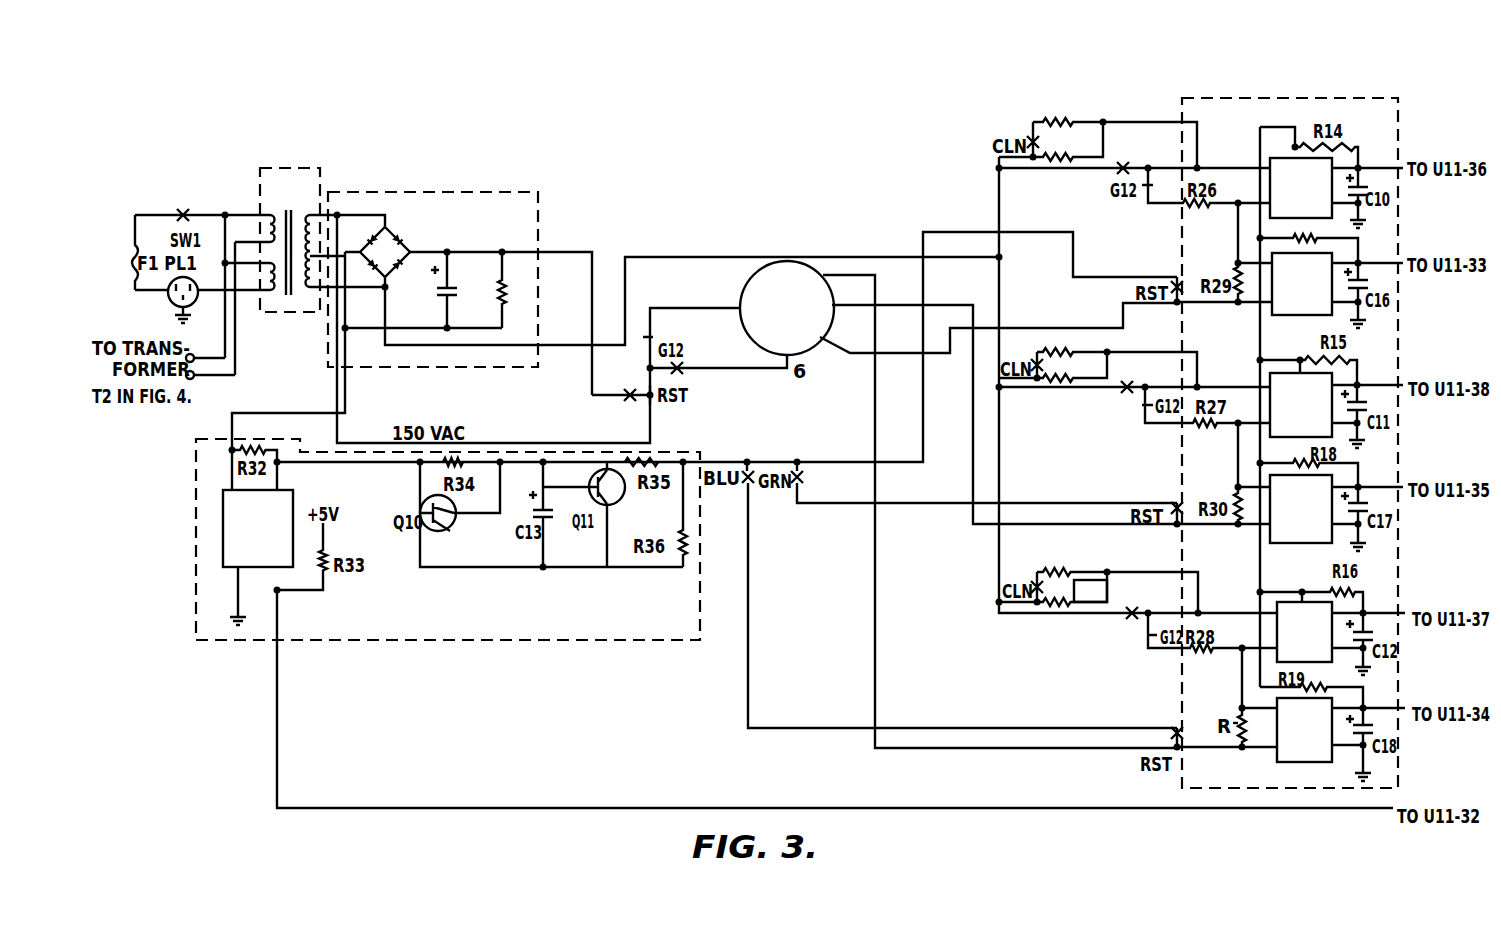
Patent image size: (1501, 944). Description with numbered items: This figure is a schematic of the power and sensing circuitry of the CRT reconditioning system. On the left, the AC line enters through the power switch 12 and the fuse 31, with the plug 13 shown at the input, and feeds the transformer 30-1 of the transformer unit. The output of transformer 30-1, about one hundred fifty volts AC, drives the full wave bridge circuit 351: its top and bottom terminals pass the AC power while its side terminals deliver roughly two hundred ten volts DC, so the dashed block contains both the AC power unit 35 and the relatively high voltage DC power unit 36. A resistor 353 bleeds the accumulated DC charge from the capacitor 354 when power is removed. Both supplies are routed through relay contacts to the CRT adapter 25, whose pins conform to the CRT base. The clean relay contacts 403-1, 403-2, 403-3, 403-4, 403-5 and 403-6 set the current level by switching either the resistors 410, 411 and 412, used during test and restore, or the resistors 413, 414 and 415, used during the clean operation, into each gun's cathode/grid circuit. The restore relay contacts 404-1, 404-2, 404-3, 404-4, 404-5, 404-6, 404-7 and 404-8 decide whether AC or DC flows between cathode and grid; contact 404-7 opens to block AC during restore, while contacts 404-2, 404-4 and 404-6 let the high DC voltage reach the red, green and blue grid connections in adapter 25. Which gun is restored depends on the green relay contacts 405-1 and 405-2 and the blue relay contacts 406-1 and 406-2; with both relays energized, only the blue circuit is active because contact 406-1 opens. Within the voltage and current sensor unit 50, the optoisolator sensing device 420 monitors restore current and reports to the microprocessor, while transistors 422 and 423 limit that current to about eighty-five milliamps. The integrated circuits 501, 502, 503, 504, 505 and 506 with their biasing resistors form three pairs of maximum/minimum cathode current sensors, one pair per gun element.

The power switch 12 is at (187, 209).
The power plug PL1 13 is at (170, 302).
The fuse 31 is at (130, 251).
The transformer 30-1 is at (265, 168).
The AC power unit 35 is at (479, 192).
The relatively high voltage DC power unit 36 is at (615, 308).
The voltage and current sensor unit 50 is at (443, 642).
The full wave bridge circuit 351 is at (393, 233).
The resistor 353 is at (508, 292).
The capacitor 354 is at (450, 282).
The adapter 25 is at (742, 293).
The clean relay contact 403-1 is at (1040, 128).
The clean relay contact 403-2 is at (1000, 133).
The clean relay contact 403-3 is at (1048, 383).
The clean relay contact 403-4 is at (1037, 357).
The clean relay contact 403-5 is at (1047, 605).
The clean relay contact 403-6 is at (1030, 582).
The restore relay contact 404-1 is at (1188, 302).
The restore relay contact 404-2 is at (1177, 280).
The restore relay contact 404-3 is at (1190, 527).
The restore relay contact 404-4 is at (1177, 500).
The restore relay contact 404-5 is at (1201, 749).
The restore relay contact 404-6 is at (1179, 727).
The restore relay contact 404-7 is at (652, 412).
The restore relay contact 404-8 is at (632, 400).
The green relay contact 405-1 is at (813, 459).
The green relay contact 405-2 is at (803, 477).
The blue relay contact 406-1 is at (778, 458).
The blue relay contact 406-2 is at (752, 490).
The resistor 410 is at (1083, 140).
The resistor 411 is at (1067, 380).
The resistor 412 is at (1073, 604).
The resistor 413 is at (1065, 89).
The resistor 414 is at (1068, 350).
The resistor 415 is at (1080, 572).
The optoisolator sensing device 420 is at (297, 491).
The transistor 422 is at (456, 528).
The transistor 423 is at (624, 496).
The integrated circuit 501 is at (1297, 176).
The integrated circuit 502 is at (1303, 316).
The integrated circuit 503 is at (1332, 437).
The integrated circuit 504 is at (1313, 544).
The integrated circuit 505 is at (1332, 662).
The integrated circuit 506 is at (1276, 760).